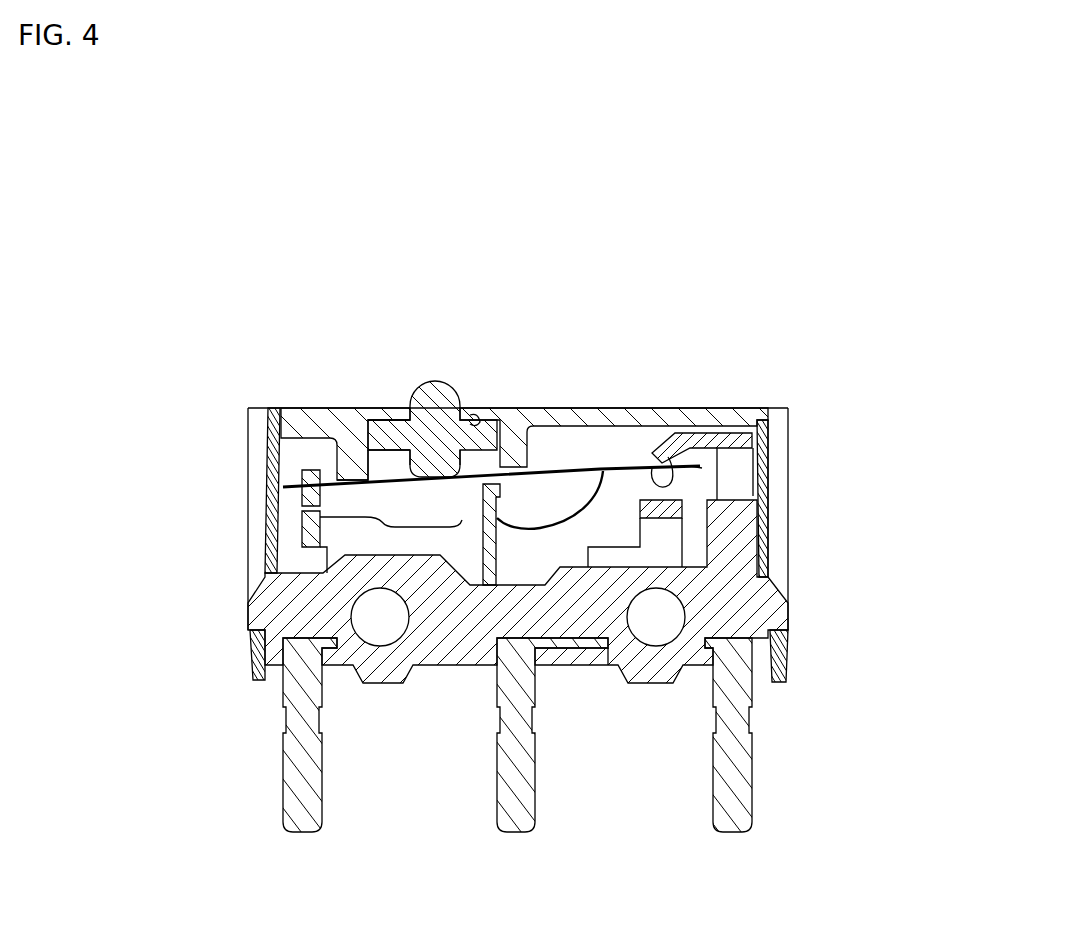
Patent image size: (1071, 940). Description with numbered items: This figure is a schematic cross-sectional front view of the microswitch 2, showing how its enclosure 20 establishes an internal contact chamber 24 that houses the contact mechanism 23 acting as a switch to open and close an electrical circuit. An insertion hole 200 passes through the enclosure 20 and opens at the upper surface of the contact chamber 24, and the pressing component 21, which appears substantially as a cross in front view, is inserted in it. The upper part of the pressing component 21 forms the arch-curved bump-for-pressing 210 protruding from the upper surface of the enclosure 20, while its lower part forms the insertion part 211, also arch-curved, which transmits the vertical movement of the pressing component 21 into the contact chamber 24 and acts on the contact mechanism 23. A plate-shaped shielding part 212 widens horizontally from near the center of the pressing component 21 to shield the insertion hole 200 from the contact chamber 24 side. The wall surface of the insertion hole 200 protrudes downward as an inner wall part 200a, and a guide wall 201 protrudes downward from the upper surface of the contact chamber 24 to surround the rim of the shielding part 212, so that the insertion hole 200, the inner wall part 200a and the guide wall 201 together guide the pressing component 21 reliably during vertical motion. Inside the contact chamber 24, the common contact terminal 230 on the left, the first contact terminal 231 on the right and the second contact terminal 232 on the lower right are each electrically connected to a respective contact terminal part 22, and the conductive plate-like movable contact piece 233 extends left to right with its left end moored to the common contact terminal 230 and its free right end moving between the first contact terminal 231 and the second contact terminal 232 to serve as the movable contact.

The microswitch 2 is at (800, 303).
The enclosure 20 is at (677, 407).
The pressing component 21 is at (442, 283).
The bump-for-pressing 210 is at (421, 440).
The insertion part 211 is at (385, 442).
The shielding part 212 is at (360, 480).
The insertion hole 200 is at (442, 418).
The inner wall part 200a is at (478, 420).
The guide wall 201 is at (520, 458).
The contact terminal part 22 is at (303, 818).
The contact mechanism 23 is at (877, 415).
The common contact terminal 230 is at (277, 500).
The first contact terminal 231 is at (740, 442).
The second contact terminal 232 is at (675, 510).
The movable contact piece 233 is at (702, 468).
The contact chamber 24 is at (487, 590).